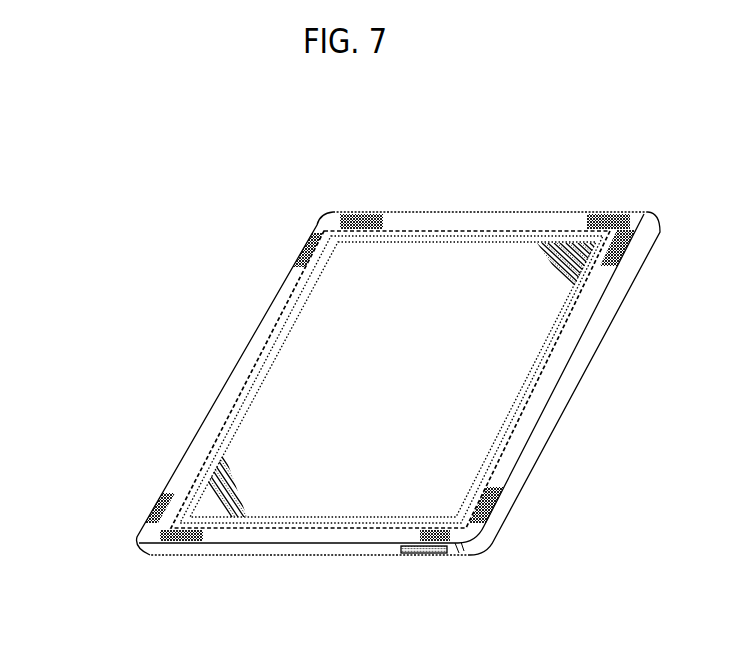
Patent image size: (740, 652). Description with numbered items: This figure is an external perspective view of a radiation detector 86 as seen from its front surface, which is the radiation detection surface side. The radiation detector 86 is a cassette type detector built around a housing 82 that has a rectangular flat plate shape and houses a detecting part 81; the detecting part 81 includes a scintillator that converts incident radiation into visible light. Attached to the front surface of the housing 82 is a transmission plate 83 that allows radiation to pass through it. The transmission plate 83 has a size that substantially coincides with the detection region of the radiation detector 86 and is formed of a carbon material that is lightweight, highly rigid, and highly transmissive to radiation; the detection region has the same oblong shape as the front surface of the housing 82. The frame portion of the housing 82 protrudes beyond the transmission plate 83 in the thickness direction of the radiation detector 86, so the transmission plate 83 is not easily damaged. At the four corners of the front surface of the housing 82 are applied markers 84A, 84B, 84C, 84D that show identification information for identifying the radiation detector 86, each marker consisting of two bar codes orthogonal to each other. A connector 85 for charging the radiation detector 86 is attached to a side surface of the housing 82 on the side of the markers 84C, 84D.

The detecting part 81 is at (310, 487).
The housing 82 is at (403, 213).
The transmission plate 83 is at (290, 403).
The marker 84A is at (340, 212).
The marker 84B is at (610, 213).
The marker 84C is at (452, 528).
The marker 84D is at (147, 507).
The connector 85 is at (423, 551).
The radiation detector 86 is at (532, 160).